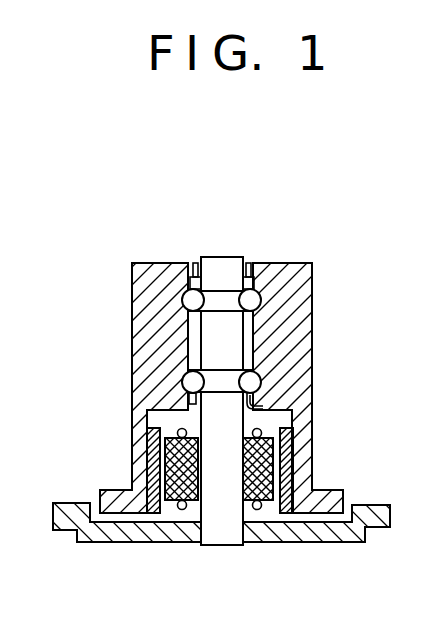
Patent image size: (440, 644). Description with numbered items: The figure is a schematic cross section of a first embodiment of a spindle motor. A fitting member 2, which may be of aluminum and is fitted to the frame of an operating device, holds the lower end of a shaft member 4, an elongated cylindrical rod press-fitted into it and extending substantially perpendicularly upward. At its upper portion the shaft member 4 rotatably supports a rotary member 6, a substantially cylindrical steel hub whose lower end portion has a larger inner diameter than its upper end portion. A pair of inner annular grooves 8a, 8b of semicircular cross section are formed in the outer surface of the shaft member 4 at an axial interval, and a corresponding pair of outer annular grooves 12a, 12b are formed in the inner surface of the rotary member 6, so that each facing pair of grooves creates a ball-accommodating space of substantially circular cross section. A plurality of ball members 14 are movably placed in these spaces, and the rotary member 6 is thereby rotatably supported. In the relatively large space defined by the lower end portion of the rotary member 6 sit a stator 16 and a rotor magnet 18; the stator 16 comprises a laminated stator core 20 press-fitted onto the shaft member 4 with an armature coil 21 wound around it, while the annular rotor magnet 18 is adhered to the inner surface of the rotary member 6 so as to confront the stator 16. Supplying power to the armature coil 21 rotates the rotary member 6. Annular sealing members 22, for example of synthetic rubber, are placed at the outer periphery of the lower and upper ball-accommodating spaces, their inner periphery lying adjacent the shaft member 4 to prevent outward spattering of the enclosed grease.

The fitting member 2 is at (110, 548).
The shaft member 4 is at (237, 244).
The rotary member 6 is at (321, 288).
The inner annular groove 8a is at (262, 366).
The inner annular groove 8b is at (262, 292).
The outer annular groove 12a is at (186, 378).
The outer annular groove 12b is at (186, 305).
The ball members 14 is at (190, 298).
The stator 16 is at (254, 521).
The rotor magnet 18 is at (150, 443).
The stator core 20 is at (190, 510).
The armature coil 21 is at (272, 432).
The sealing member 22 is at (195, 278).